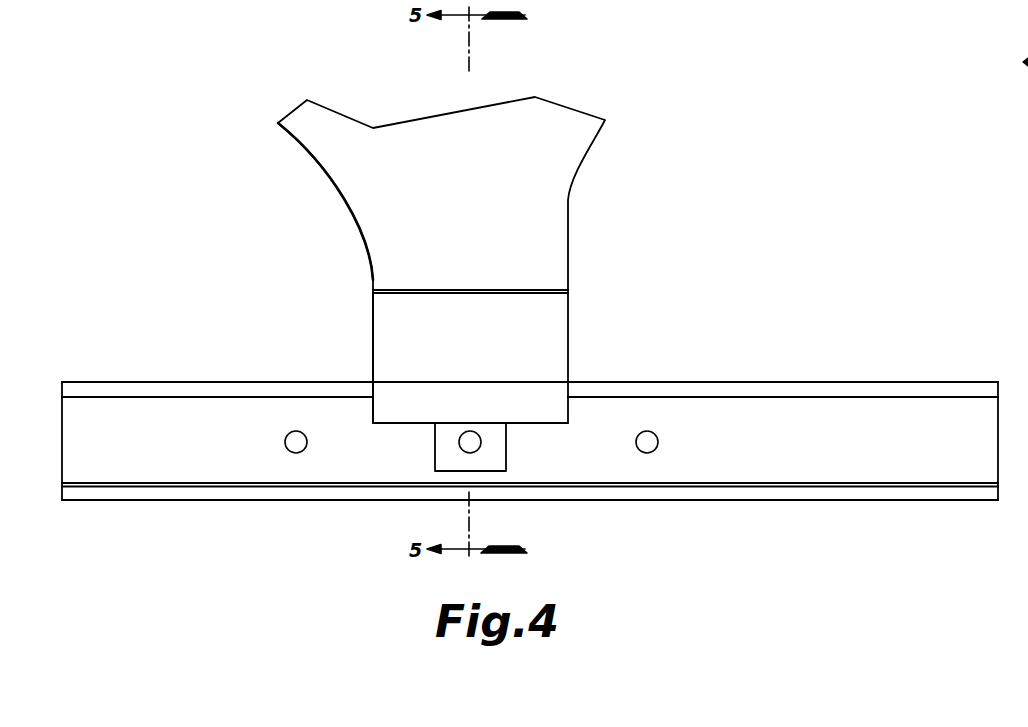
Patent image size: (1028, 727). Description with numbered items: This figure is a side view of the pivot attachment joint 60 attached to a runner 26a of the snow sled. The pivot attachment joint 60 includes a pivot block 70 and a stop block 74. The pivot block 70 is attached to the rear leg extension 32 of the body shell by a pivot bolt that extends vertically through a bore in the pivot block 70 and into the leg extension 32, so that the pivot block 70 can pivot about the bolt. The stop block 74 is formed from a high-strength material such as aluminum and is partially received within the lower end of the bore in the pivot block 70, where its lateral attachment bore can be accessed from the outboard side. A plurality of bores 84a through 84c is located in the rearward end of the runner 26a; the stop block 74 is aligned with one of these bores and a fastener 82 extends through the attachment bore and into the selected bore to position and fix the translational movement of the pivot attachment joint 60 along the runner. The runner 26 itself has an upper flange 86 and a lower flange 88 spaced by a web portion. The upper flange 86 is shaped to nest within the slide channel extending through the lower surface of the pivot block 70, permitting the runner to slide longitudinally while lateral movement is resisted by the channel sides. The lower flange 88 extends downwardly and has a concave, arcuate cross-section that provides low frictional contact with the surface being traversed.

The runner 26 is at (978, 438).
The runner 26a is at (868, 382).
The leg extension 32 is at (567, 200).
The pivot attachment joint 60 is at (372, 331).
The pivot block 70 is at (574, 354).
The stop block 74 is at (516, 460).
The fastener 82 is at (470, 442).
The bore 84a is at (288, 451).
The bore 84c is at (655, 449).
The upper flange 86 is at (963, 381).
The lower flange 88 is at (943, 496).